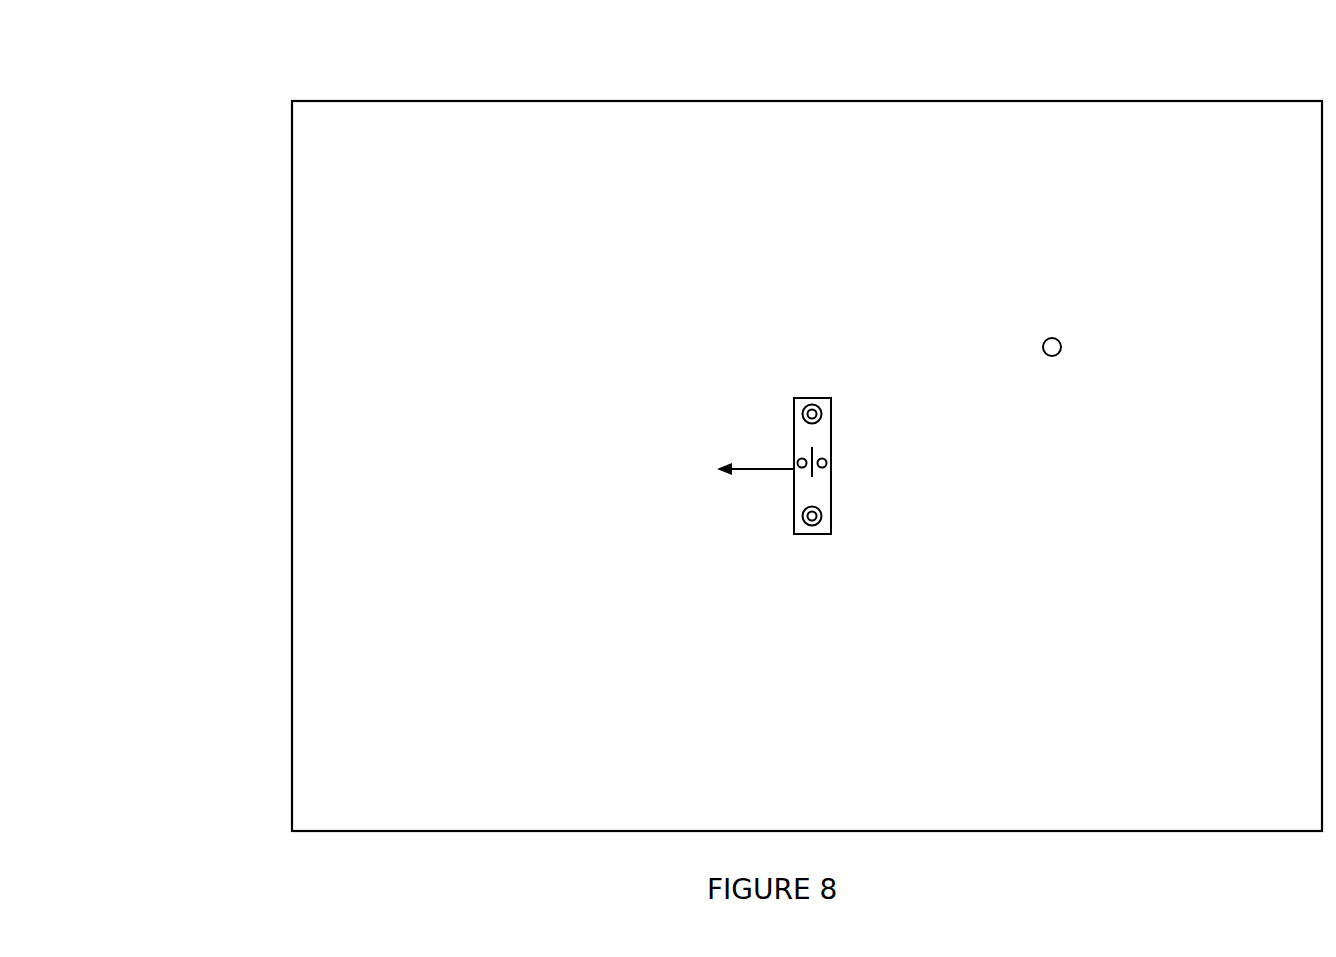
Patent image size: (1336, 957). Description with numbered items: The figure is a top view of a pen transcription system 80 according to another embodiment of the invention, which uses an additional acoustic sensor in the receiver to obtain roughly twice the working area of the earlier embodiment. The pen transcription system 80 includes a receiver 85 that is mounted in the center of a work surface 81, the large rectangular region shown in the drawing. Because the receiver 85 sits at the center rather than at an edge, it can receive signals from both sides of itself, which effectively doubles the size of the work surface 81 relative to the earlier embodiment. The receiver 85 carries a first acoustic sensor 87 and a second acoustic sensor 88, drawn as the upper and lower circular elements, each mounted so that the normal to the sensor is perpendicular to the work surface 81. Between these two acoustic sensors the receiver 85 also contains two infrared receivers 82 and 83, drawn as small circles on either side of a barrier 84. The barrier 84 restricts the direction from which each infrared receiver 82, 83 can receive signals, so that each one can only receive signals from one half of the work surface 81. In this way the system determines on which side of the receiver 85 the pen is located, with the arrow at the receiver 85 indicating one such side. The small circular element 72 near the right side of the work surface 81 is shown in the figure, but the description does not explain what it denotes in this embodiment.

The pen transcription system 80 is at (145, 126).
The work surface 81 is at (752, 727).
The infrared receiver 82 is at (828, 460).
The infrared receiver 83 is at (797, 460).
The barrier 84 is at (812, 477).
The receiver 85 is at (824, 436).
The first acoustic sensor 87 is at (812, 400).
The second acoustic sensor 88 is at (817, 533).
The sensor 72 is at (1052, 338).